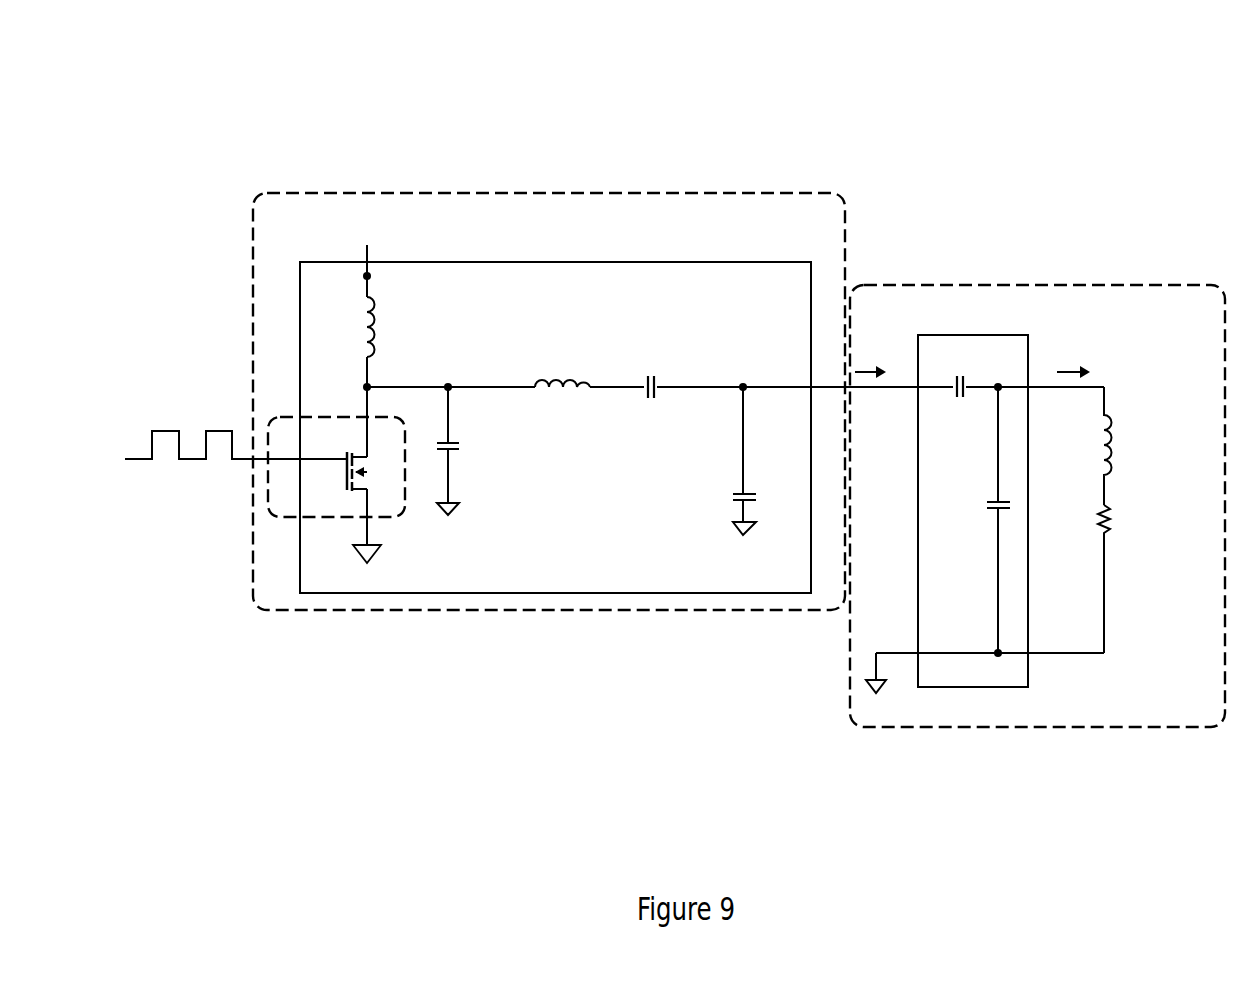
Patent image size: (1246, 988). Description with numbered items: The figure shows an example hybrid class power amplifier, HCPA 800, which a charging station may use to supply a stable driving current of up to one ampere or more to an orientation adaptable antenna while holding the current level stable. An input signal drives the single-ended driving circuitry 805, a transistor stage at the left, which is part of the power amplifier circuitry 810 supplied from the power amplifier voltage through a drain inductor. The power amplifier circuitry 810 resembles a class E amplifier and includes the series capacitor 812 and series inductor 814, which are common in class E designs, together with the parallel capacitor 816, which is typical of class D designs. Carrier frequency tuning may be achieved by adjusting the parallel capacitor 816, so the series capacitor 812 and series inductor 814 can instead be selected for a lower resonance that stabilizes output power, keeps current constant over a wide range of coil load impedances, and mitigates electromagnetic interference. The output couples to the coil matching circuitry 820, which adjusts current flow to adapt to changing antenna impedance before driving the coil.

The hybrid class power amplifier (HCPA) 800 is at (210, 54).
The single-ended driving circuitry 805 is at (318, 417).
The power amplifier circuitry 810 is at (342, 193).
The capacitor Cs1 812 is at (649, 376).
The inductor Ls1 814 is at (548, 377).
The capacitor Cp2 816 is at (740, 493).
The coil matching circuitry 820 is at (970, 285).